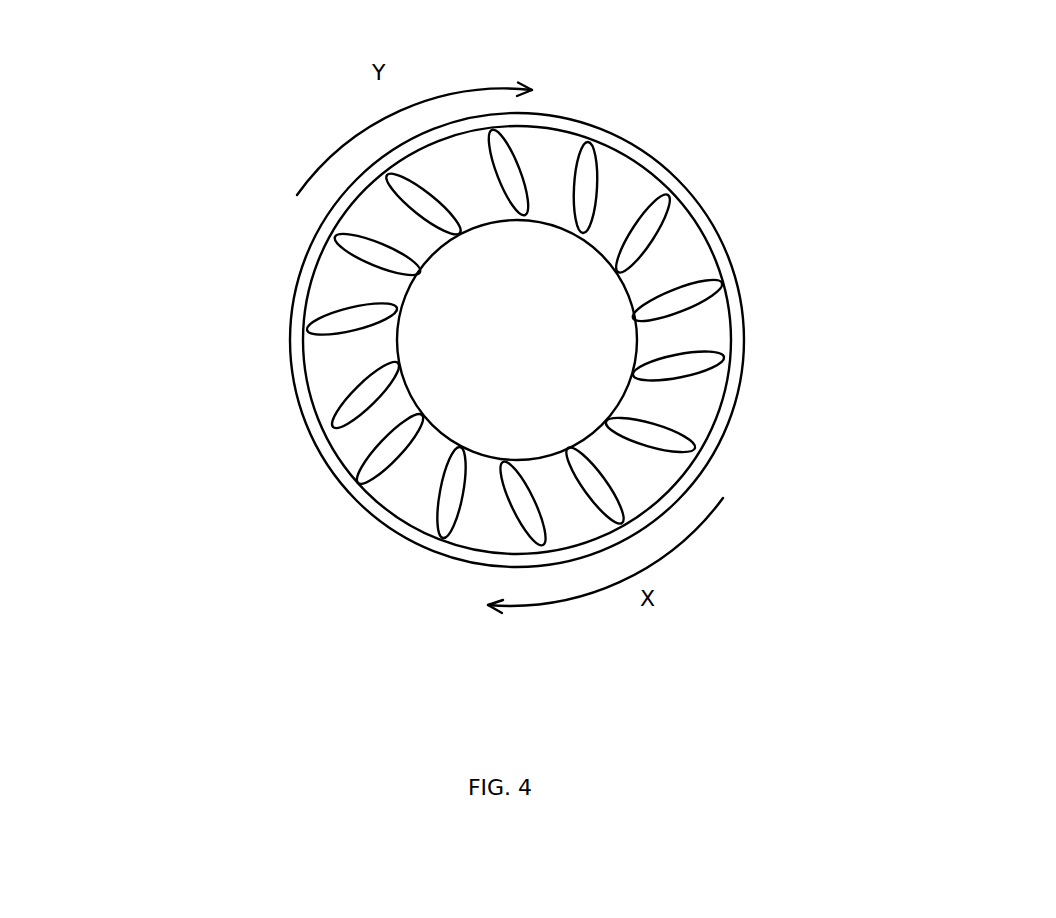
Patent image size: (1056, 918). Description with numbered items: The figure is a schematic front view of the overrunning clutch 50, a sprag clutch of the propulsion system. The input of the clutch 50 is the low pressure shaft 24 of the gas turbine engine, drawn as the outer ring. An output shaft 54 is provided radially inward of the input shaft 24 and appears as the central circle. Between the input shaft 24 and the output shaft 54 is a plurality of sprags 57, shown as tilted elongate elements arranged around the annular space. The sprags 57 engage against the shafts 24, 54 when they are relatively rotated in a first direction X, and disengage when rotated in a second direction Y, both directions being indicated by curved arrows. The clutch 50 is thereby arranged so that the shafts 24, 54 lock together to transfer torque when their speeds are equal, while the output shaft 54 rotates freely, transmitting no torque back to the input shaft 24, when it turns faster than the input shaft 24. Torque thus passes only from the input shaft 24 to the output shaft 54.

The low pressure shaft 24 is at (610, 125).
The overrunning clutch 50 is at (832, 197).
The output shaft 54 is at (413, 403).
The sprags 57 is at (680, 378).